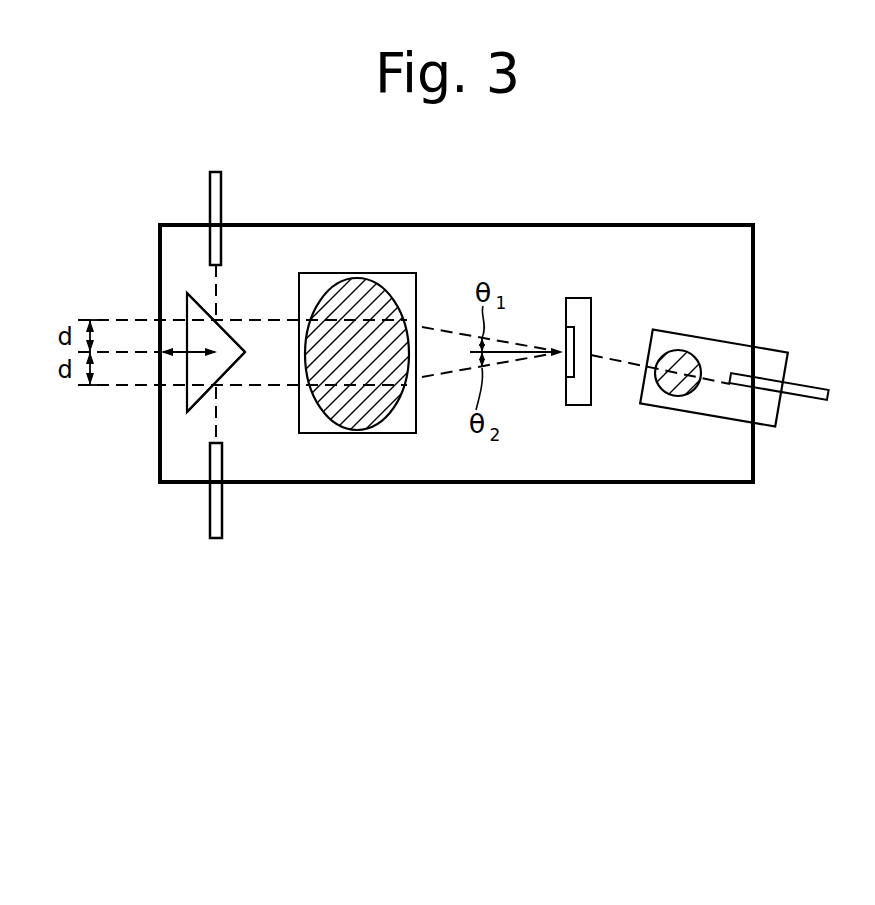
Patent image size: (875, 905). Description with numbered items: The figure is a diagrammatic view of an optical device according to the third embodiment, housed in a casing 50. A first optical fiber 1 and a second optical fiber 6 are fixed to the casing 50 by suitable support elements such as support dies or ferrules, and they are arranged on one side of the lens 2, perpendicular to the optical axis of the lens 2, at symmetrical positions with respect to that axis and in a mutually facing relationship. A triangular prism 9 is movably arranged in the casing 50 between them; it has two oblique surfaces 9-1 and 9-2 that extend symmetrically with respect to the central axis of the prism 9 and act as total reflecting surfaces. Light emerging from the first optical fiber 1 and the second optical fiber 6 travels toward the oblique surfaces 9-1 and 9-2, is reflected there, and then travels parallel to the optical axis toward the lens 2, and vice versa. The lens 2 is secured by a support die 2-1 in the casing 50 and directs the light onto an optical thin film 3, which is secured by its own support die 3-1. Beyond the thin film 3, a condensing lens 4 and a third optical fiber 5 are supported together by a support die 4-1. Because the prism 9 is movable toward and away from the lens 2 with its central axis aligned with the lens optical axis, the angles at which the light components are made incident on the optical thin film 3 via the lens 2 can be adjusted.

The first optical fiber 1 is at (216, 172).
The second optical fiber 6 is at (217, 540).
The triangular prism 9 is at (187, 307).
The oblique surface 9-1 is at (201, 299).
The oblique surface 9-2 is at (203, 404).
The lens 2 is at (359, 280).
The support die 2-1 is at (357, 435).
The optical thin film 3 is at (566, 366).
The support die 3-1 is at (583, 406).
The condensing lens 4 is at (678, 352).
The support die 4-1 is at (766, 428).
The third optical fiber 5 is at (820, 390).
The casing 50 is at (678, 225).